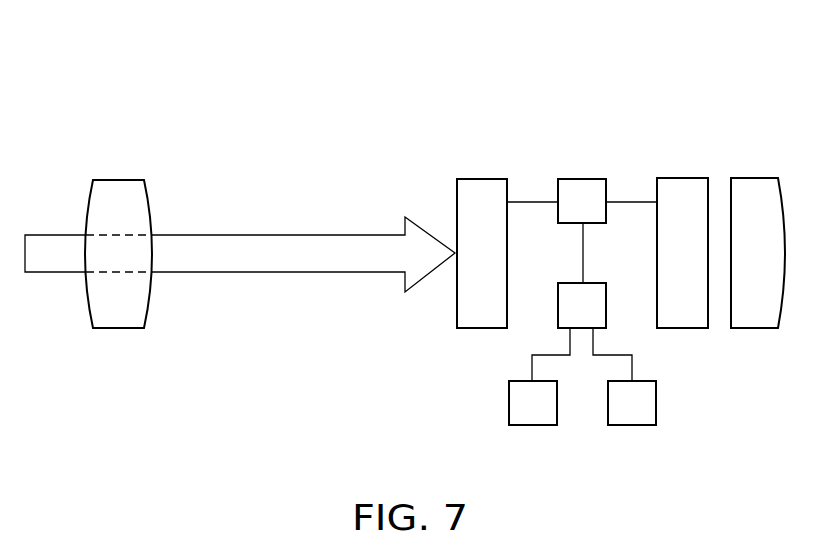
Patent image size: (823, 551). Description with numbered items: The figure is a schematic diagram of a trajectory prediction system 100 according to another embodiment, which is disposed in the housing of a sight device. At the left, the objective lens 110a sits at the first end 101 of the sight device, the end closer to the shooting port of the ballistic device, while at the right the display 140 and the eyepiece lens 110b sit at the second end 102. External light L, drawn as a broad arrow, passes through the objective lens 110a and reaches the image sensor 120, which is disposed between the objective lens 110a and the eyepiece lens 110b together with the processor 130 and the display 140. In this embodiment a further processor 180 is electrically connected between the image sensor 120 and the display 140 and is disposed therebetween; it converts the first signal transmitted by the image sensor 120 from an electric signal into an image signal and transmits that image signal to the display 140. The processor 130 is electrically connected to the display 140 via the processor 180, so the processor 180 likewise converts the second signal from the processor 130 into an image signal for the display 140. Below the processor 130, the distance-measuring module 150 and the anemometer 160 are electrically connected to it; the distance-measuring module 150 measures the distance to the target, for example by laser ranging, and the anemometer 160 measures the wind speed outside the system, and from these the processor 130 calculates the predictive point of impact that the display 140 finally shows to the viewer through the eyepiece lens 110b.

The trajectory prediction system 100 is at (75, 43).
The first end 101 is at (78, 145).
The second end 102 is at (747, 143).
The objective lens 110a is at (118, 330).
The eyepiece lens 110b is at (756, 330).
The light beam L is at (278, 273).
The image sensor 120 is at (471, 330).
The processor 130 is at (568, 283).
The display 140 is at (693, 330).
The distance-measuring module 150 is at (533, 427).
The anemometer 160 is at (632, 427).
The processor 180 is at (581, 178).